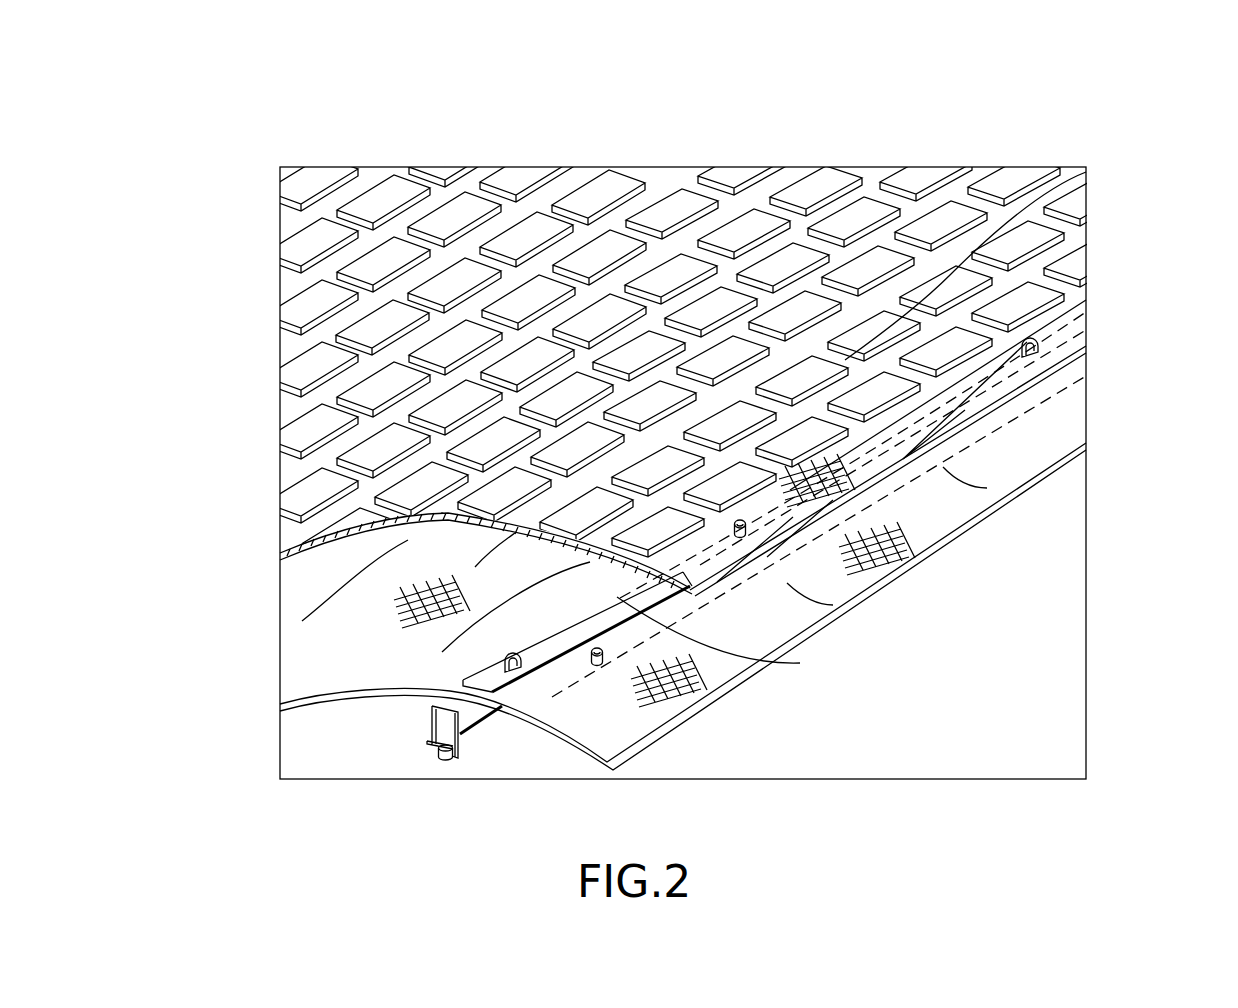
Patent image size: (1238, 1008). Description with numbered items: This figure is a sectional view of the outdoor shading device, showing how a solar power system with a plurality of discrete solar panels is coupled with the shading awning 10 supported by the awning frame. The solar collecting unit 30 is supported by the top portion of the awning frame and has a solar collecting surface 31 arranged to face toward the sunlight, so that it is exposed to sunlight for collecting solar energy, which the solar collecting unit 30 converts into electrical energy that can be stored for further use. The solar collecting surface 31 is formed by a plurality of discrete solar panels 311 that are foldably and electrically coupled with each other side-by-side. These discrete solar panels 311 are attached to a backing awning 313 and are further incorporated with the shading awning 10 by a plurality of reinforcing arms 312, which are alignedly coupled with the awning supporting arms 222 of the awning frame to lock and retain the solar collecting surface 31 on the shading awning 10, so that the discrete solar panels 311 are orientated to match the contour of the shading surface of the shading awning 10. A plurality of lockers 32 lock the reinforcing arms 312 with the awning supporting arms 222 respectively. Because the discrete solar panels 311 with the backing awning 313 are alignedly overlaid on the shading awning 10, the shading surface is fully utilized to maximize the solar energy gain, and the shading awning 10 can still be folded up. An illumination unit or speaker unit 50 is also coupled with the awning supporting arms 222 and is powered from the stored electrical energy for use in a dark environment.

The shading awning 10 is at (365, 677).
The solar collecting unit 30 is at (885, 120).
The solar collecting surface 31 is at (595, 186).
The discrete solar panels 311 is at (868, 215).
The reinforcing arms 312 is at (800, 663).
The backing awning 313 is at (1086, 172).
The locker 32 is at (1036, 342).
The illumination unit or speaker unit 50 is at (445, 758).
The awning supporting arms 222 is at (485, 728).